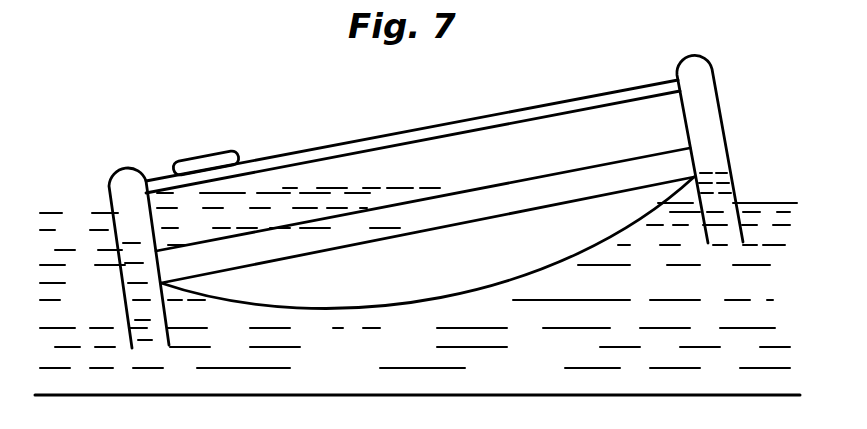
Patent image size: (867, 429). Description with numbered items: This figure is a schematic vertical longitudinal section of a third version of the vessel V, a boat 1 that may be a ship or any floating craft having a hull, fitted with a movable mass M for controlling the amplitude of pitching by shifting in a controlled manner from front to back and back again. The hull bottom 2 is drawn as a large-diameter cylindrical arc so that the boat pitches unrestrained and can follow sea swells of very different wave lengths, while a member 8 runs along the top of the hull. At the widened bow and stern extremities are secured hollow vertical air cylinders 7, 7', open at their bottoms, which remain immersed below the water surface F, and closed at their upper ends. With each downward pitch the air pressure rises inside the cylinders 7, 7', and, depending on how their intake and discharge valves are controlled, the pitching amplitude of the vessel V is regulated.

The boat 1 is at (503, 258).
The bottom 2 is at (353, 312).
The hollow vertical air cylinder 7 is at (128, 227).
The hollow vertical air cylinder 7' is at (722, 149).
The gunwale rail 8 is at (643, 87).
The motor M is at (207, 157).
The vessel V is at (420, 209).
The water surface F is at (418, 270).